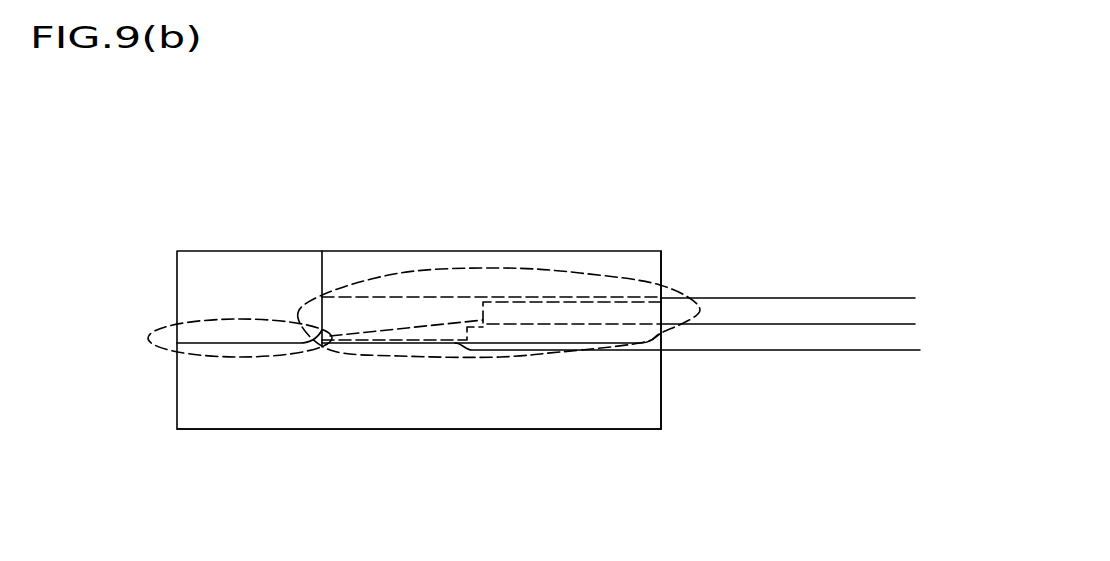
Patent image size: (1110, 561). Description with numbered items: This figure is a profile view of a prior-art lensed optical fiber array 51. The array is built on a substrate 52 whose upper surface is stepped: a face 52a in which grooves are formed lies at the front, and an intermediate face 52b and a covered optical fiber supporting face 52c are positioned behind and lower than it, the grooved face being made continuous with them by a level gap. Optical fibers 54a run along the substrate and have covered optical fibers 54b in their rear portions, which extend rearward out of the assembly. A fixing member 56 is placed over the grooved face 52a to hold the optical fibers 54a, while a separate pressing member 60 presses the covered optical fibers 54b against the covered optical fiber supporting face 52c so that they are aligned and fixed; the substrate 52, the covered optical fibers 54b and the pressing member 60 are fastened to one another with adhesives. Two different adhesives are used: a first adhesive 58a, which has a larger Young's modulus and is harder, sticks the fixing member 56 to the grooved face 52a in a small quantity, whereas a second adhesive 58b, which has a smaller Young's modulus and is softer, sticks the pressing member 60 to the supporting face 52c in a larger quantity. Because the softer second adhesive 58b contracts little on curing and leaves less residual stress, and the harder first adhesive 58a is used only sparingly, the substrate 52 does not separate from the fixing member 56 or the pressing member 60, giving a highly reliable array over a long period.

The optical fiber array 51 is at (513, 158).
The substrate 52 is at (190, 393).
The face in which grooves are formed 52a is at (258, 347).
The intermediate face 52b is at (420, 348).
The covered optical fiber supporting face 52c is at (613, 348).
The optical fibers 54a is at (442, 340).
The covered optical fibers 54b is at (762, 312).
The fixing member 56 is at (185, 287).
The first adhesive 58a is at (236, 320).
The second adhesive 58b is at (527, 282).
The pressing member 60 is at (650, 262).